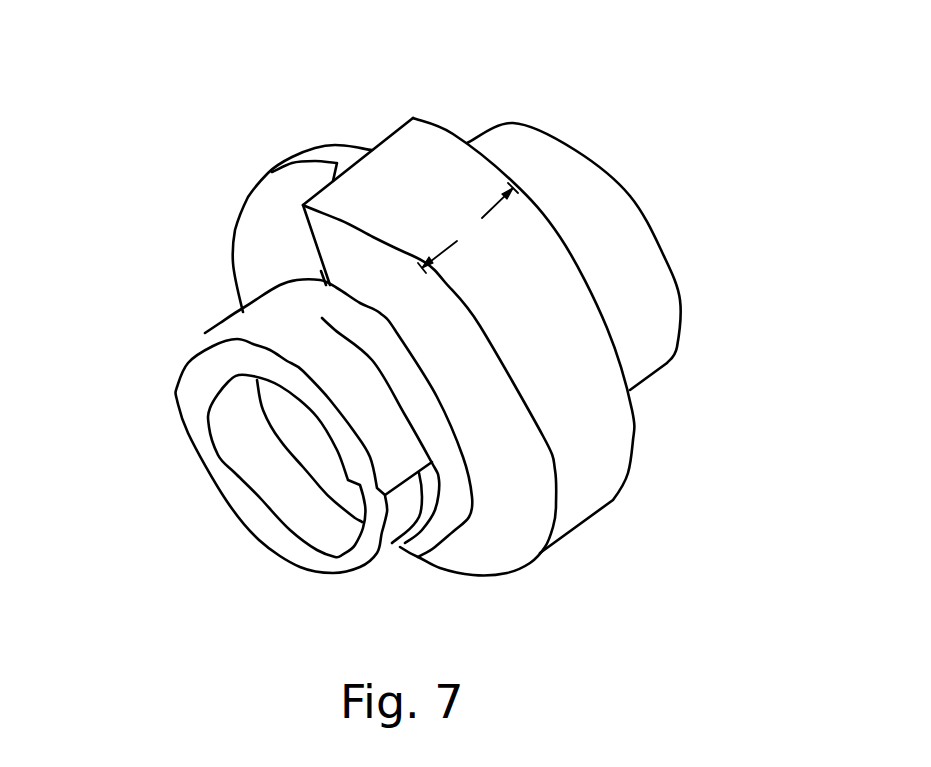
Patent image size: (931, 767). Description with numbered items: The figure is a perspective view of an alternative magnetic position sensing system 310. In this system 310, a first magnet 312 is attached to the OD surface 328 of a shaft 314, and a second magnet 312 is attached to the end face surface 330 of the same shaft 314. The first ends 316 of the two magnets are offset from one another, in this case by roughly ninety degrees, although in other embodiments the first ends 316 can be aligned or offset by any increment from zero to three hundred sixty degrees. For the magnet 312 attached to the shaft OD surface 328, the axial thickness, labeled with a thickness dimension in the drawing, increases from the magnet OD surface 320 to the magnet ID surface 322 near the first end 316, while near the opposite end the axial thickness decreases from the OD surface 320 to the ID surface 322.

The alternative system 310 is at (175, 126).
The magnet 312 is at (468, 349).
The shaft 314 is at (650, 285).
The first end 316 is at (362, 136).
The OD surface 320 is at (440, 177).
The ID surface 322 is at (286, 426).
The shaft OD surface 328 is at (608, 233).
The end face surface 330 is at (312, 462).